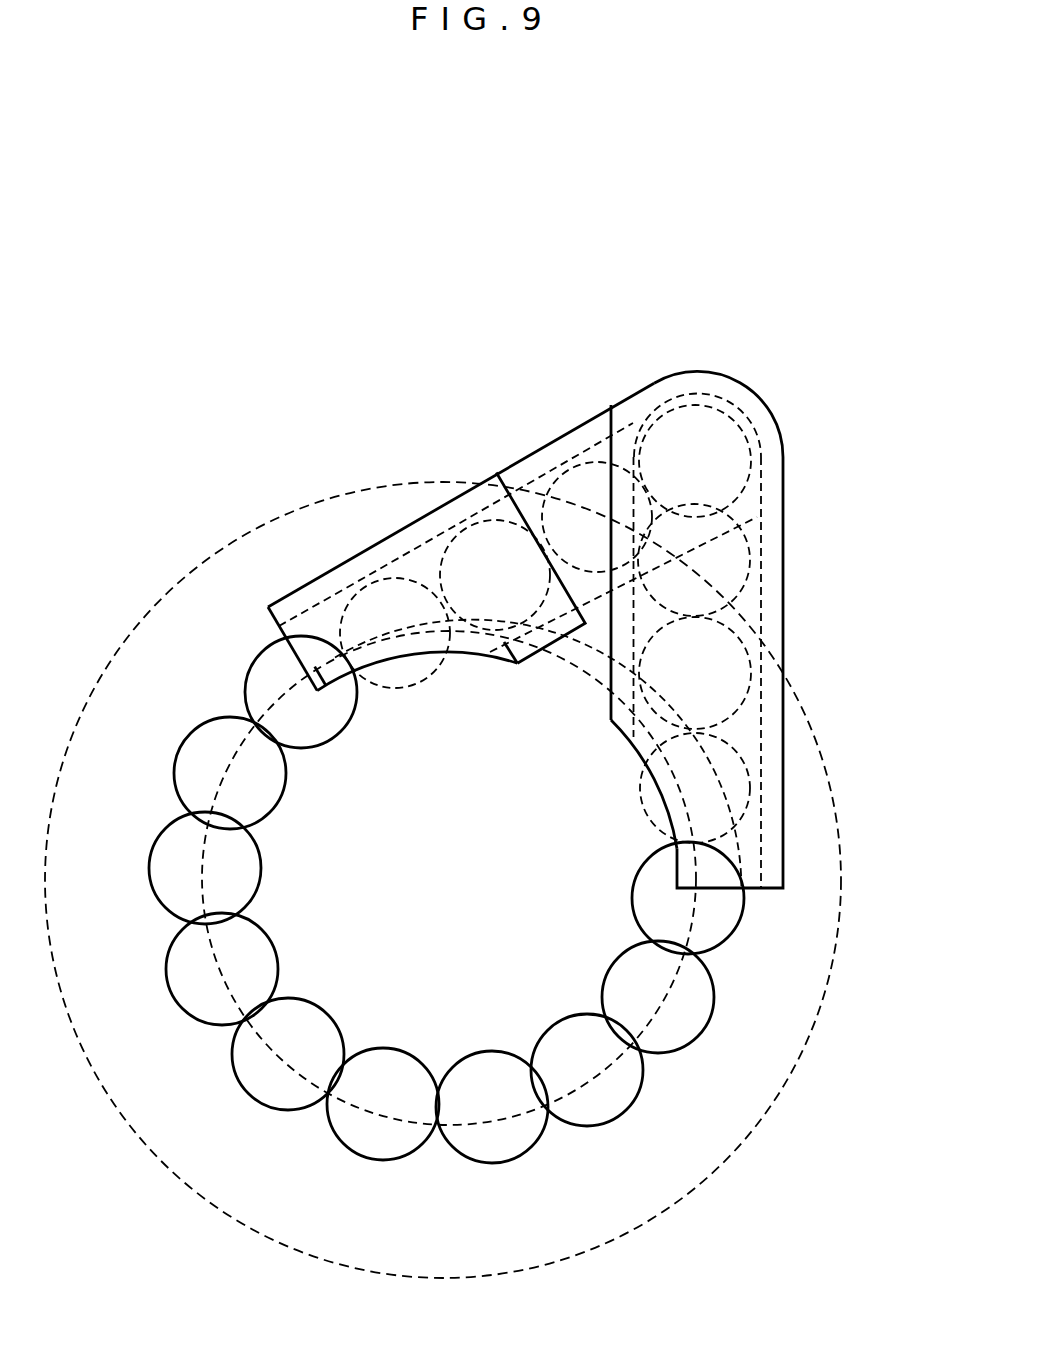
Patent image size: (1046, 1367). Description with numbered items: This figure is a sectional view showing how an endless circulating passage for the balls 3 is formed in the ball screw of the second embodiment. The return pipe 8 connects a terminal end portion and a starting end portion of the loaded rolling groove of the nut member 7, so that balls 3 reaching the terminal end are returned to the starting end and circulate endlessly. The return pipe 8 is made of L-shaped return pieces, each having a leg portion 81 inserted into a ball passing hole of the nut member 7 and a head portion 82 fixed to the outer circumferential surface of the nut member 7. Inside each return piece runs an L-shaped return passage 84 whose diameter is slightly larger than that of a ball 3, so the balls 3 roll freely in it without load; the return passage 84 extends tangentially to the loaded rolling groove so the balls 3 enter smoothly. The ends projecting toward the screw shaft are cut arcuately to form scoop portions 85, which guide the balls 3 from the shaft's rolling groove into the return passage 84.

The ball 3 is at (648, 900).
The nut member 7 is at (800, 696).
The return pipe 8 is at (584, 598).
The leg portion 81 is at (355, 557).
The head portion 82 is at (668, 373).
The return passage 84 is at (435, 550).
The scoop portion 85 is at (420, 655).